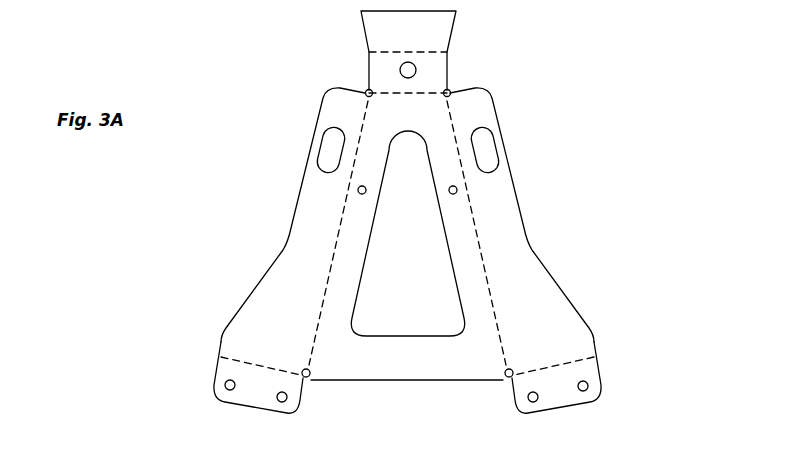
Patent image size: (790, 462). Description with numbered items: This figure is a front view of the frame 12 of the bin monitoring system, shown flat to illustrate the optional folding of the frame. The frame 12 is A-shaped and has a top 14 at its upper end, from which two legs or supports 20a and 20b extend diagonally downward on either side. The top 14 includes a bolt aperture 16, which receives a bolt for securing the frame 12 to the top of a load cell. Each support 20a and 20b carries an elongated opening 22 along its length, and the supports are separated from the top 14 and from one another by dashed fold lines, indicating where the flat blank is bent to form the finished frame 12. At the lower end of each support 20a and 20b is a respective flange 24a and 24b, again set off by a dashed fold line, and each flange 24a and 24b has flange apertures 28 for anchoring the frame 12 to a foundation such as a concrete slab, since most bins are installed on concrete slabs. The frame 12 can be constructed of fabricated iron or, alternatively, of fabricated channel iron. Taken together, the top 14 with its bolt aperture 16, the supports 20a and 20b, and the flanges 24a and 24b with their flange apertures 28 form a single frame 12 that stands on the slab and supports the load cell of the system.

The frame 12 is at (276, 103).
The top 14 is at (376, 72).
The bolt aperture 16 is at (413, 73).
The support 20a is at (295, 212).
The support 20b is at (521, 215).
The slot 22 is at (326, 148).
The flange 24a is at (214, 373).
The flange 24b is at (601, 373).
The flange aperture 28 is at (229, 394).